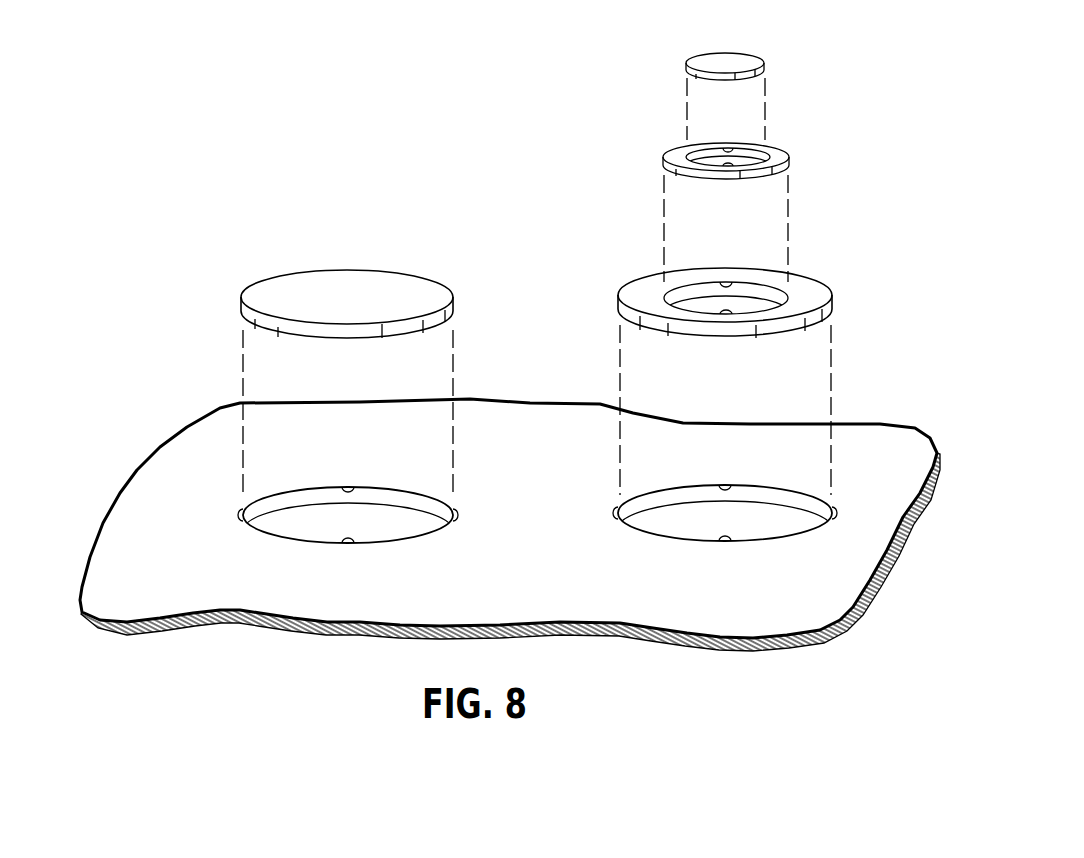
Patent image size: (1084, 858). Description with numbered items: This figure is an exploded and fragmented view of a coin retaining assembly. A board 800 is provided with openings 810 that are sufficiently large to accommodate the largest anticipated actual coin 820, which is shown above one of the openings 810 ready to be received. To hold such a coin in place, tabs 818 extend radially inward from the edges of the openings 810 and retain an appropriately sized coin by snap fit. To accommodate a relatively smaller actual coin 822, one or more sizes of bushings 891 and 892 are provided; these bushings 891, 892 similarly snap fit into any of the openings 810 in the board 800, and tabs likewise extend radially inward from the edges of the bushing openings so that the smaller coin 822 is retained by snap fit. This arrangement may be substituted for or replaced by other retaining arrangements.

The board 800 is at (680, 640).
The openings 810 is at (303, 527).
The tabs 818 is at (350, 486).
The actual coin 820 is at (266, 289).
The smaller actual coin 822 is at (707, 60).
The bushing 891 is at (808, 290).
The bushing 892 is at (773, 152).